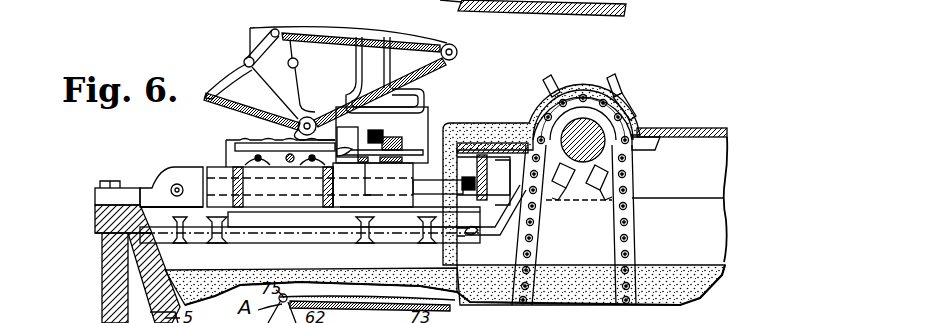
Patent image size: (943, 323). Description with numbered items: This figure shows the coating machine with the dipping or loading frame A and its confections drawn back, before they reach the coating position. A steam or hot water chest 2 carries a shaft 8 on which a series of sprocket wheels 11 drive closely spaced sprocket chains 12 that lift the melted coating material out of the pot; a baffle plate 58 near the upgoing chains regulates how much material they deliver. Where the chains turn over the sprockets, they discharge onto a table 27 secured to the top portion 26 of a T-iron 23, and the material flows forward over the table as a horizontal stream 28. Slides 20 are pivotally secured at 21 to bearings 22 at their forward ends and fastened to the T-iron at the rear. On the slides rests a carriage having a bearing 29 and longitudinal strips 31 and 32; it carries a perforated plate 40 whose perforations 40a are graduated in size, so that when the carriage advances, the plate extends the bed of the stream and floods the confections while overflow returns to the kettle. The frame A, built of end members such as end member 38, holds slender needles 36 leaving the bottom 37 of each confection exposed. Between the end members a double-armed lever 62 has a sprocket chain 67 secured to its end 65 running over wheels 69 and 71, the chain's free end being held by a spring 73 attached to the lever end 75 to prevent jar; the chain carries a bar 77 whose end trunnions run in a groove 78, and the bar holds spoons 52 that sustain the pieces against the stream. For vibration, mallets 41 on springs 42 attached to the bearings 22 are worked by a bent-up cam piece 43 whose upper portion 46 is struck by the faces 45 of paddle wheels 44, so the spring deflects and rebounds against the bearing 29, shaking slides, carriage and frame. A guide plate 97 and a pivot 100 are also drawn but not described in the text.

The steam or hot water chest 2 is at (104, 293).
The bearings 22 is at (96, 193).
The pivotal mounting 21 is at (178, 183).
The longitudinal strip 32 is at (250, 190).
The longitudinal strip 31 is at (333, 190).
The guide plate 97 is at (318, 145).
The bearing 29 is at (284, 206).
The springs 42 is at (262, 228).
The mallets 41 is at (350, 228).
The slides 20 is at (425, 205).
The needles 36 is at (433, 150).
The spoons 52 is at (362, 134).
The bottom of the confection 37 is at (412, 133).
The perforated plate 40 is at (420, 180).
The perforations 40a is at (375, 164).
The top portion of the T-iron 26 is at (463, 142).
The table 27 is at (500, 140).
The T-iron 23 is at (490, 171).
The upper portion of the cam piece 46 is at (488, 194).
The bent-up cam piece 43 is at (510, 235).
The horizontal stream 28 is at (513, 120).
The sprocket chains 12 is at (535, 243).
The sprocket wheels 11 is at (598, 194).
The faces 45 is at (617, 80).
The paddle wheels 44 is at (632, 105).
The baffle plate 58 is at (692, 128).
The shaft 8 is at (640, 150).
The spring 73 is at (348, 30).
The end member 38 is at (250, 29).
The end of lever 75 is at (276, 31).
The pivot pin 100 is at (245, 58).
The double-armed lever 62 is at (232, 84).
The end of lever 65 is at (206, 98).
The sprocket chain 67 is at (272, 114).
The wheel 69 is at (300, 120).
The wheel 71 is at (457, 51).
The bar 77 is at (333, 112).
The groove 78 is at (370, 80).
The dipping or loading frame A is at (320, 74).